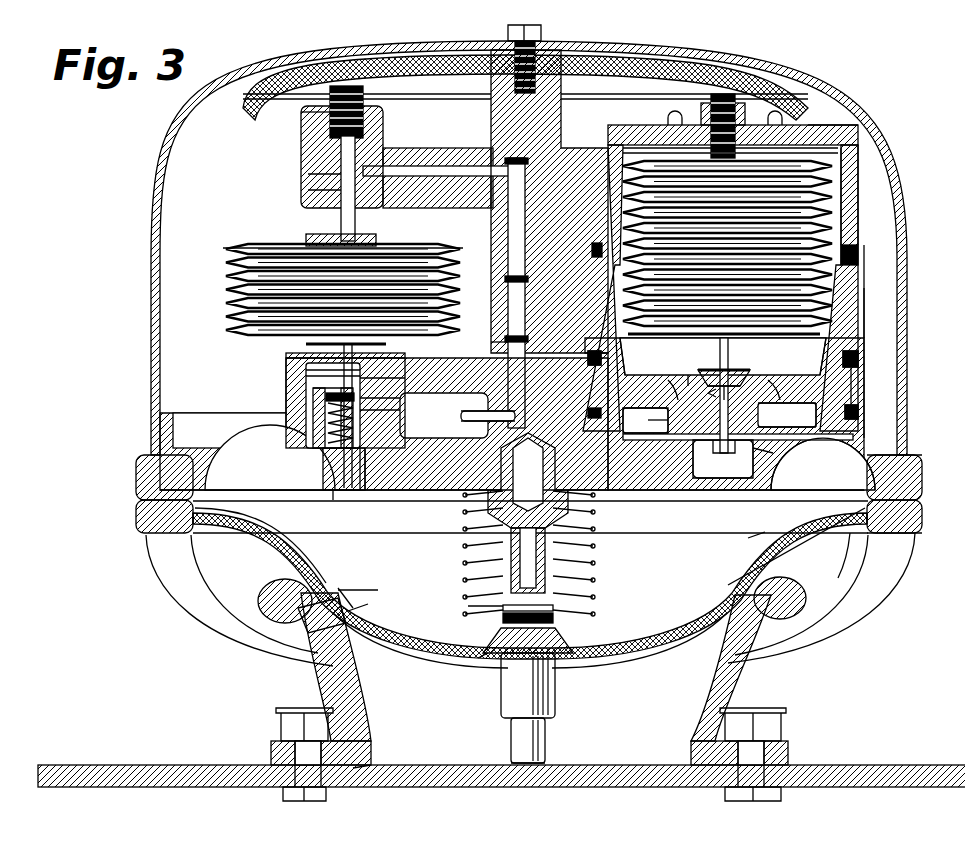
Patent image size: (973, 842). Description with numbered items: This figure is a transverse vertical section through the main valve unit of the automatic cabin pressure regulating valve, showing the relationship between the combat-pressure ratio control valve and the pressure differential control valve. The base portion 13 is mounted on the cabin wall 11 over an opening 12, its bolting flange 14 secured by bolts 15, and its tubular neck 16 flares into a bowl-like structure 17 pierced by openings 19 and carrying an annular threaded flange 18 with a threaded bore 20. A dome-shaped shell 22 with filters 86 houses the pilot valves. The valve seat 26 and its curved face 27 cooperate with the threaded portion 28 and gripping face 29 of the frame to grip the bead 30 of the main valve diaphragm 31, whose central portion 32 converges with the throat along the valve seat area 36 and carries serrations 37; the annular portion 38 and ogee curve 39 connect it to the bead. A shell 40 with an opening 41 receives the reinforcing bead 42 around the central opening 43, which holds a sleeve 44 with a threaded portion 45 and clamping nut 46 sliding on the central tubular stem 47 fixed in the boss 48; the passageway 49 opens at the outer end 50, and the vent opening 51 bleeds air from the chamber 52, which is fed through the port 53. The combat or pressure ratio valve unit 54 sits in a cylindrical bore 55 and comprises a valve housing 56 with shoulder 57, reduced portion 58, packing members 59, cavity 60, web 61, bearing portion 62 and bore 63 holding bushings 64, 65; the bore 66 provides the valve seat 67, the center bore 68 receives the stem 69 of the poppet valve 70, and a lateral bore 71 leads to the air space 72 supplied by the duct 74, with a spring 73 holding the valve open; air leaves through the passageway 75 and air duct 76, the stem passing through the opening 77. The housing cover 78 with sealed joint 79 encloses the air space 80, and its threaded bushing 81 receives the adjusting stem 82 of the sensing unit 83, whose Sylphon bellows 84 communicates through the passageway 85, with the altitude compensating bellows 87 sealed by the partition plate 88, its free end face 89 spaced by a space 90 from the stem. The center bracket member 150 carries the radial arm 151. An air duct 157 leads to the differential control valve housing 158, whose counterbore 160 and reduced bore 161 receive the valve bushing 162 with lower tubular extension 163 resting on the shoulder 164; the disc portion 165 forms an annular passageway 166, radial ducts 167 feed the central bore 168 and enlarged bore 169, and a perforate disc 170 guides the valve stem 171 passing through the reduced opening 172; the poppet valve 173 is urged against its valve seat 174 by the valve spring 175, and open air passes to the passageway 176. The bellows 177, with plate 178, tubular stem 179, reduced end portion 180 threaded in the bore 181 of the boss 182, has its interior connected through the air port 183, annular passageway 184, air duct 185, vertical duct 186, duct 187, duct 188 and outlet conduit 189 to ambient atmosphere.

The airplane cabin wall 11 is at (865, 765).
The opening 12 is at (362, 762).
The base portion 13 is at (292, 670).
The bolting flange 14 is at (263, 742).
The bolts 15 is at (292, 702).
The tubular outwardly flaring neck 16 is at (718, 676).
The bowl-like structure 17 is at (195, 610).
The annular threaded flange 18 is at (128, 466).
The openings 19 is at (870, 598).
The threaded bore 20 is at (914, 452).
The dome-shaped shell 22 is at (735, 58).
The valve seat 26 is at (912, 518).
The curved face 27 is at (838, 527).
The annular threaded portion 28 is at (825, 478).
The gripping face 29 is at (860, 497).
The annular bead 30 is at (128, 500).
The main valve diaphragm 31 is at (658, 644).
The central portion 32 is at (604, 650).
The valve seat area 36 is at (282, 571).
The serrations 37 is at (345, 621).
The annular portion 38 is at (782, 572).
The ogee curve 39 is at (745, 533).
The shell 40 is at (312, 560).
The opening 41 is at (560, 612).
The reinforcing bead 42 is at (470, 650).
The central opening 43 is at (550, 648).
The sleeve 44 is at (540, 675).
The threaded portion 45 is at (560, 598).
The clamping nut 46 is at (460, 600).
The central tubular stem 47 is at (470, 543).
The boss 48 is at (582, 496).
The central tubular passageway 49 is at (555, 575).
The outer end 50 is at (522, 760).
The vent opening 51 is at (550, 548).
The chamber 52 is at (372, 580).
The port 53 is at (356, 470).
The combined combat or pressure ratio valve unit 54 is at (843, 119).
The cylindrical bore 55 is at (852, 380).
The cylindrical valve housing 56 is at (880, 272).
The shoulder 57 is at (856, 322).
The reduced cylindrical portion 58 is at (616, 340).
The packing members 59 is at (852, 350).
The cup-shaped cavity 60 is at (880, 285).
The transverse web 61 is at (856, 384).
The central bearing portion 62 is at (683, 360).
The bore 63 is at (672, 418).
The lower valve seat bushing 64 is at (760, 412).
The upper valve seat bushing 65 is at (775, 350).
The central bore 66 is at (765, 400).
The valve seat 67 is at (722, 372).
The center bore 68 is at (796, 412).
The stem 69 is at (725, 360).
The poppet valve 70 is at (662, 372).
The lateral bore 71 is at (645, 418).
The air space 72 is at (720, 440).
The spring 73 is at (712, 425).
The duct 74 is at (758, 445).
The passageway 75 is at (775, 372).
The air duct 76 is at (742, 362).
The opening 77 is at (712, 352).
The housing cover 78 is at (795, 124).
The hermetically sealed joint 79 is at (603, 233).
The air space 80 is at (820, 160).
The threaded bushing 81 is at (735, 116).
The threaded adjusting stem 82 is at (712, 92).
The fluid pressure sensing unit 83 is at (822, 190).
The Sylphon bellows 84 is at (835, 112).
The central passageway 85 is at (700, 104).
The filters 86 is at (575, 48).
The altitude compensating bellows 87 is at (833, 230).
The intermediate partition plate 88 is at (780, 204).
The free end face 89 is at (685, 329).
The space 90 is at (735, 328).
The center bracket member 150 is at (560, 76).
The radial arm 151 is at (435, 140).
The air duct 157 is at (385, 402).
The pressure differential control valve housing 158 is at (392, 423).
The counterbore 160 is at (280, 365).
The reduced bore 161 is at (300, 412).
The valve bushing 162 is at (392, 353).
The lower tubular extension 163 is at (318, 452).
The shoulder 164 is at (320, 460).
The enlarged disc portion 165 is at (300, 336).
The annular flow passageway 166 is at (298, 376).
The radial ducts 167 is at (320, 355).
The central bore 168 is at (393, 373).
The enlarged bore 169 is at (322, 466).
The perforate disc 170 is at (328, 475).
The valve stem 171 is at (360, 360).
The reduced opening 172 is at (345, 355).
The poppet valve 173 is at (300, 388).
The valve seat 174 is at (385, 390).
The valve spring 175 is at (378, 482).
The passageway 176 is at (330, 488).
The pressure differential control valve bellows 177 is at (227, 226).
The plate 178 is at (380, 333).
The tubular stem 179 is at (300, 148).
The reduced end portion 180 is at (358, 82).
The threaded bore 181 is at (372, 105).
The boss 182 is at (298, 130).
The air port 183 is at (300, 166).
The annular passageway 184 is at (300, 182).
The air duct 185 is at (395, 162).
The vertical duct 186 is at (478, 148).
The duct 187 is at (478, 270).
The duct 188 is at (488, 334).
The outlet conduit 189 is at (465, 403).